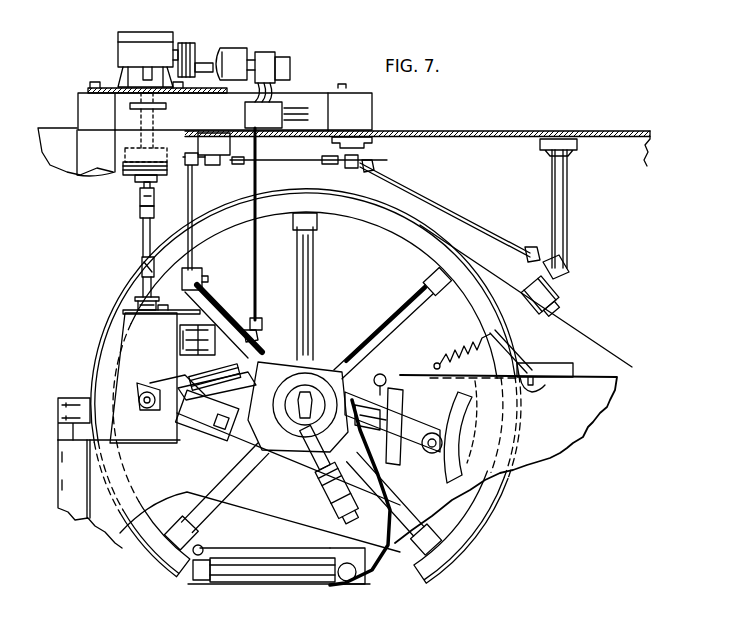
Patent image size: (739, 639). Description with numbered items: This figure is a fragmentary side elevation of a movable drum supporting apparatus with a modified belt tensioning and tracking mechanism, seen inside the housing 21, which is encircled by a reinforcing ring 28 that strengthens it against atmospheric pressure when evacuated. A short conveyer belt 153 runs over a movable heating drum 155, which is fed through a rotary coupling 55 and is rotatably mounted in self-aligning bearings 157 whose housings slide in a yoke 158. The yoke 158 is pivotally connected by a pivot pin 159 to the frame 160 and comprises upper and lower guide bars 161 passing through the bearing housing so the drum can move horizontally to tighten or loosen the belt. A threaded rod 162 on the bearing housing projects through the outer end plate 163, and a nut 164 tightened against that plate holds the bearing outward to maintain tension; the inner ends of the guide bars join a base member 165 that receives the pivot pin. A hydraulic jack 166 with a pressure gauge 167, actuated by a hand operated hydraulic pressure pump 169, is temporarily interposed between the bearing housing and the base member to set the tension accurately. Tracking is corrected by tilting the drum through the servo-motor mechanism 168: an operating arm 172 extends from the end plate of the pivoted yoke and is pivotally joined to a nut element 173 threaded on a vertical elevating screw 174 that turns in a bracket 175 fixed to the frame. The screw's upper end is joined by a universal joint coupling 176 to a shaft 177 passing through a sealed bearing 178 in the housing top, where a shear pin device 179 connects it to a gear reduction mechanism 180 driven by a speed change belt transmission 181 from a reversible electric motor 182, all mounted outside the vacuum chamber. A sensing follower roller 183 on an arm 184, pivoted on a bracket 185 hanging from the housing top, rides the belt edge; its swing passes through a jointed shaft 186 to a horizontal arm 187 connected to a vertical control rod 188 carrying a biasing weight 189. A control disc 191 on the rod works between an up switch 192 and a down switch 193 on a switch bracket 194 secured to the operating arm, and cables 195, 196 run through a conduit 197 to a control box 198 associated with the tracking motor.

The housing 21 is at (57, 128).
The reinforcing ring 28 is at (378, 110).
The rotary coupling 55 is at (310, 462).
The conveyer belt 153 is at (570, 340).
The movable heating drum 155 is at (118, 328).
The bearings 157 is at (345, 365).
The yoke or bracket 158 is at (252, 350).
The pivot pin 159 is at (456, 440).
The frame 160 is at (583, 375).
The guide bars 161 is at (306, 352).
The threaded rod 162 is at (187, 420).
The end plate 163 is at (235, 440).
The nut 164 is at (282, 382).
The base member 165 is at (403, 408).
The hydraulic jack 166 is at (380, 374).
The pressure gauge 167 is at (400, 372).
The servo-motor mechanism 168 is at (132, 216).
The hand operated hydraulic pressure pump 169 is at (268, 584).
The operating arm 172 is at (172, 440).
The nut element 173 is at (137, 408).
The elevating screw 174 is at (134, 300).
The bracket 175 is at (113, 355).
The universal joint coupling 176 is at (140, 262).
The shaft 177 is at (128, 175).
The packing gland or sealed bearing 178 is at (138, 205).
The torque limiting or shear pin device 179 is at (160, 108).
The gear reduction mechanism 180 is at (168, 45).
The speed change belt transmission 181 is at (200, 58).
The reversible electric motor 182 is at (255, 46).
The sensing follower roller 183 is at (552, 290).
The arm 184 is at (568, 272).
The bracket 185 is at (566, 264).
The jointed shaft 186 is at (432, 208).
The horizontally disposed arm 187 is at (254, 168).
The control rod 188 is at (196, 210).
The weight 189 is at (201, 280).
The control disc 191 is at (178, 330).
The up switch 192 is at (240, 318).
The down switch 193 is at (190, 356).
The switch bracket 194 is at (180, 380).
The cable 195 is at (256, 318).
The cable 196 is at (250, 328).
The conduit 197 is at (258, 255).
The control box 198 is at (278, 106).